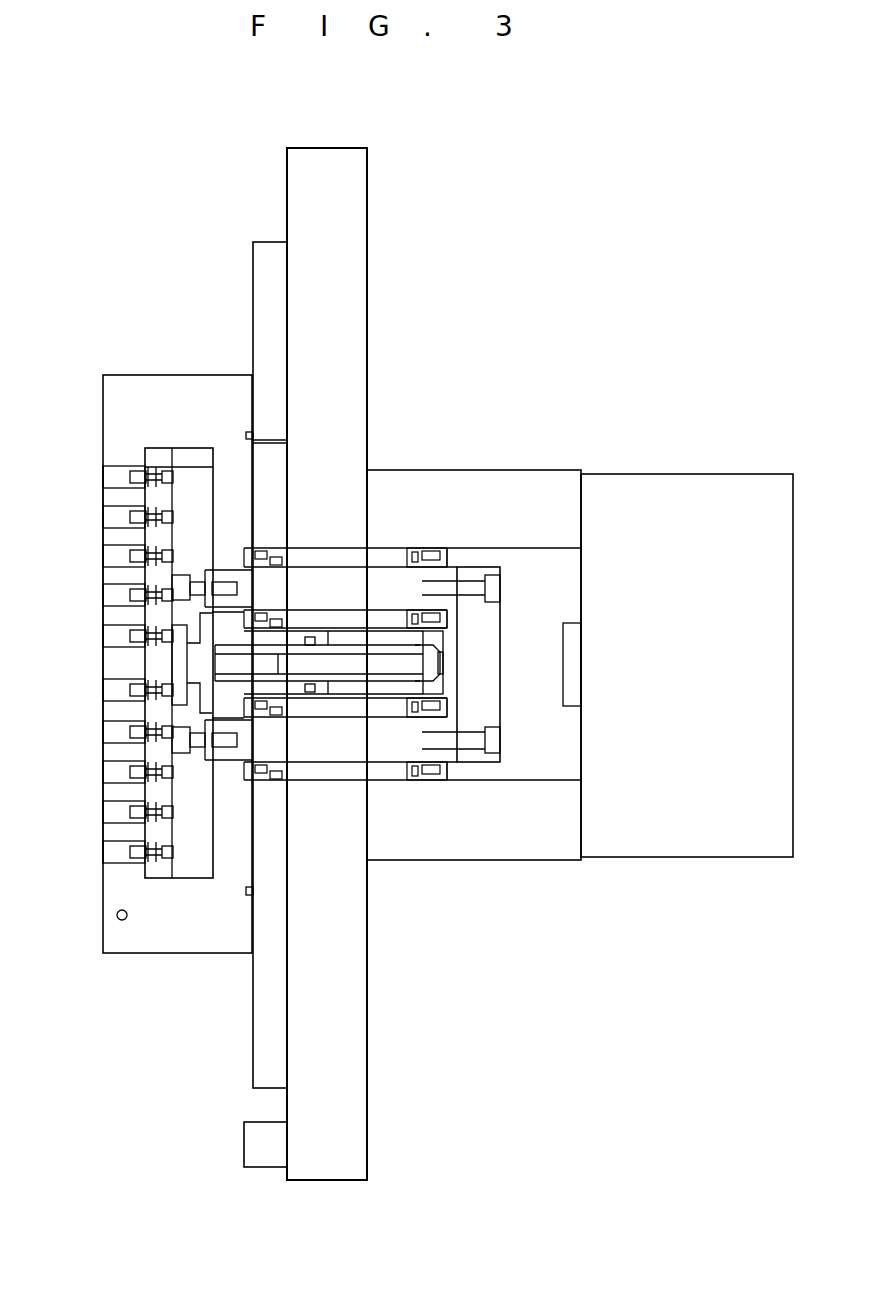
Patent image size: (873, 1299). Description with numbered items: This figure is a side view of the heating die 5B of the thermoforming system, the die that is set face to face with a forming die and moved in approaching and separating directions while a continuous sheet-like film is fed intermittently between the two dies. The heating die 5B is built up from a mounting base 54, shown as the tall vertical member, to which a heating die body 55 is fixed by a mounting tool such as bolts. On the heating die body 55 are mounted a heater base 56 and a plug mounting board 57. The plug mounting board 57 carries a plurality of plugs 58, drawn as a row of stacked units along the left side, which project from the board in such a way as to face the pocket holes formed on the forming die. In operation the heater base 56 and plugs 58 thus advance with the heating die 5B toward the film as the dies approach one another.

The mounting base 54 is at (345, 978).
The heating die body 55 is at (170, 933).
The heater base 56 is at (197, 478).
The plug mounting board 57 is at (157, 498).
The plugs 58 is at (105, 731).
The heating die 5B is at (506, 408).